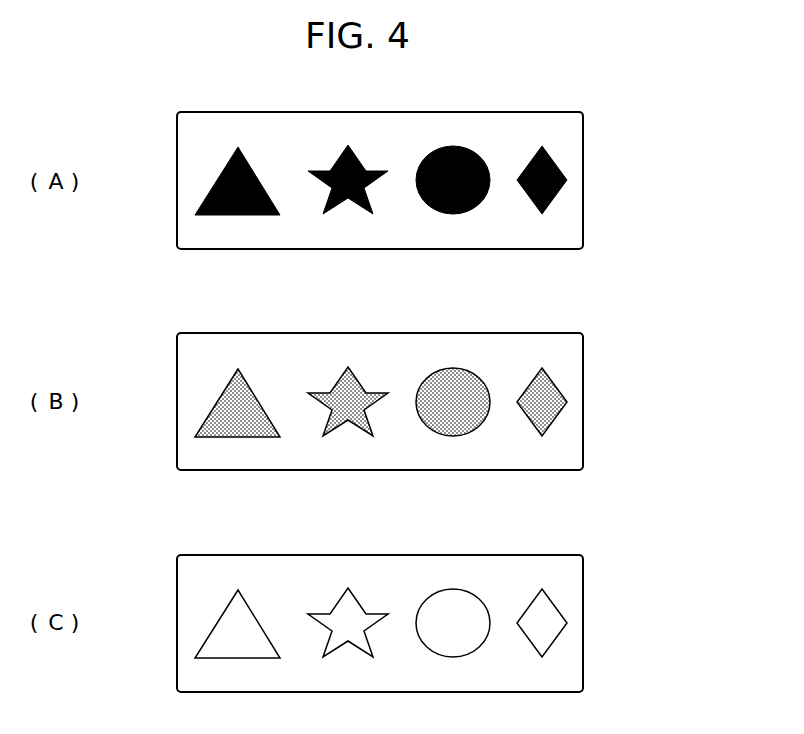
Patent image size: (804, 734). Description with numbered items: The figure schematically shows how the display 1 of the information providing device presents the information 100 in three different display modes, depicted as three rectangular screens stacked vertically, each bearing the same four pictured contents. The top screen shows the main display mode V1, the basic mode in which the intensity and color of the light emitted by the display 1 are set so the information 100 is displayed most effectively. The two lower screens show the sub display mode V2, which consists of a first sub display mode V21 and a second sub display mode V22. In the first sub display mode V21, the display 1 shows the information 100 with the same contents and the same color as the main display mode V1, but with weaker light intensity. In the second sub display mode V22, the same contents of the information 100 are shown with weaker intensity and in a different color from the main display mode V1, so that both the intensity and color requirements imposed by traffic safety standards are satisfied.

The display 1 is at (412, 398).
The information 100 is at (560, 232).
The main display mode V1 is at (566, 131).
The sub display mode V2 is at (456, 495).
The first sub display mode V21 is at (565, 359).
The second sub display mode V22 is at (566, 581).